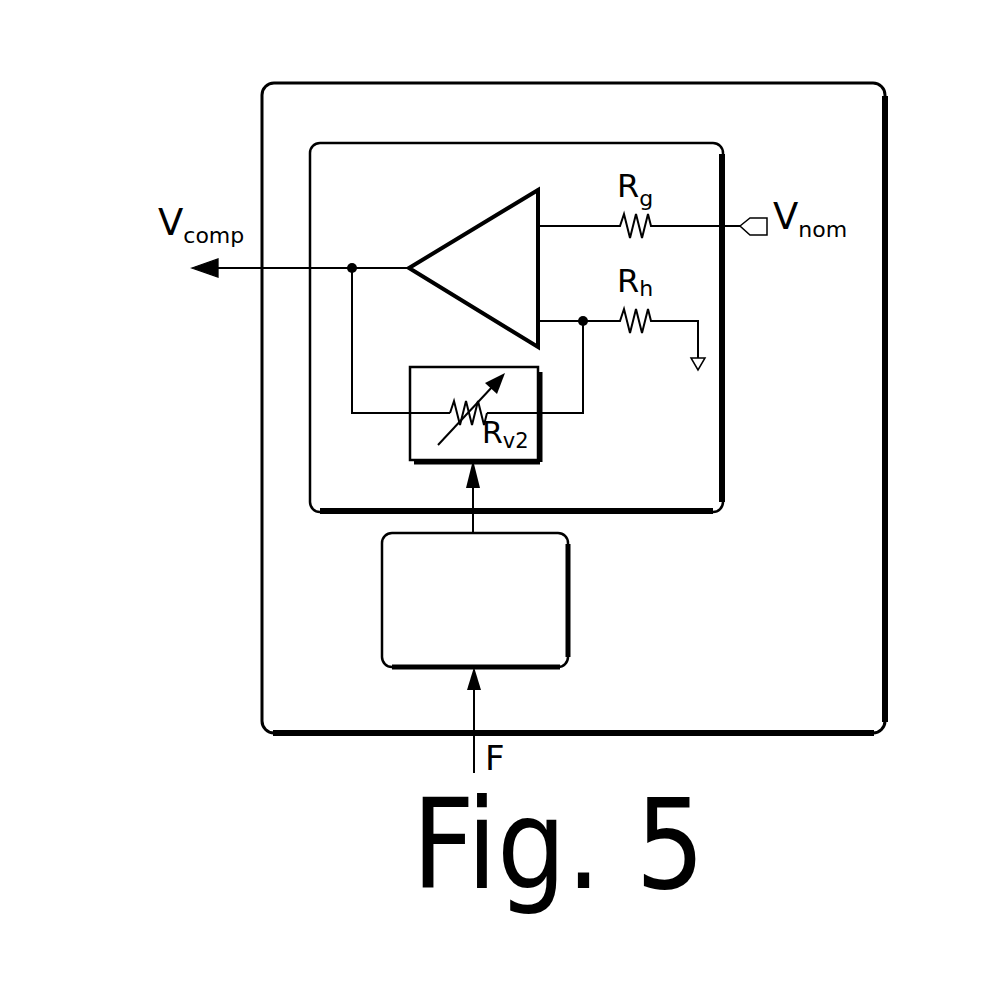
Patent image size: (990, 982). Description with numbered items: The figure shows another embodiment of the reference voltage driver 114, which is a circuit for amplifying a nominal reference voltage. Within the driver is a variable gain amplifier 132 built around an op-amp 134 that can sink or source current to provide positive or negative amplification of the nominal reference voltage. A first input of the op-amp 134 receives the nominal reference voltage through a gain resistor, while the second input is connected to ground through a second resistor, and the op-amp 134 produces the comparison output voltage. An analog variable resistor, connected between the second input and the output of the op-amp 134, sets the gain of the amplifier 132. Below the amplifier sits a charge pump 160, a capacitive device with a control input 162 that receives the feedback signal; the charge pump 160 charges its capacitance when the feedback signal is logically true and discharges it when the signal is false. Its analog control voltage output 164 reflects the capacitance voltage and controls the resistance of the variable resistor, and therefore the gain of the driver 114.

The reference voltage driver 114 is at (837, 97).
The variable gain amplifier 132 is at (700, 178).
The op-amp 134 is at (508, 225).
The charge pump 160 is at (550, 605).
The control input 162 is at (482, 672).
The analog control voltage output 164 is at (478, 498).